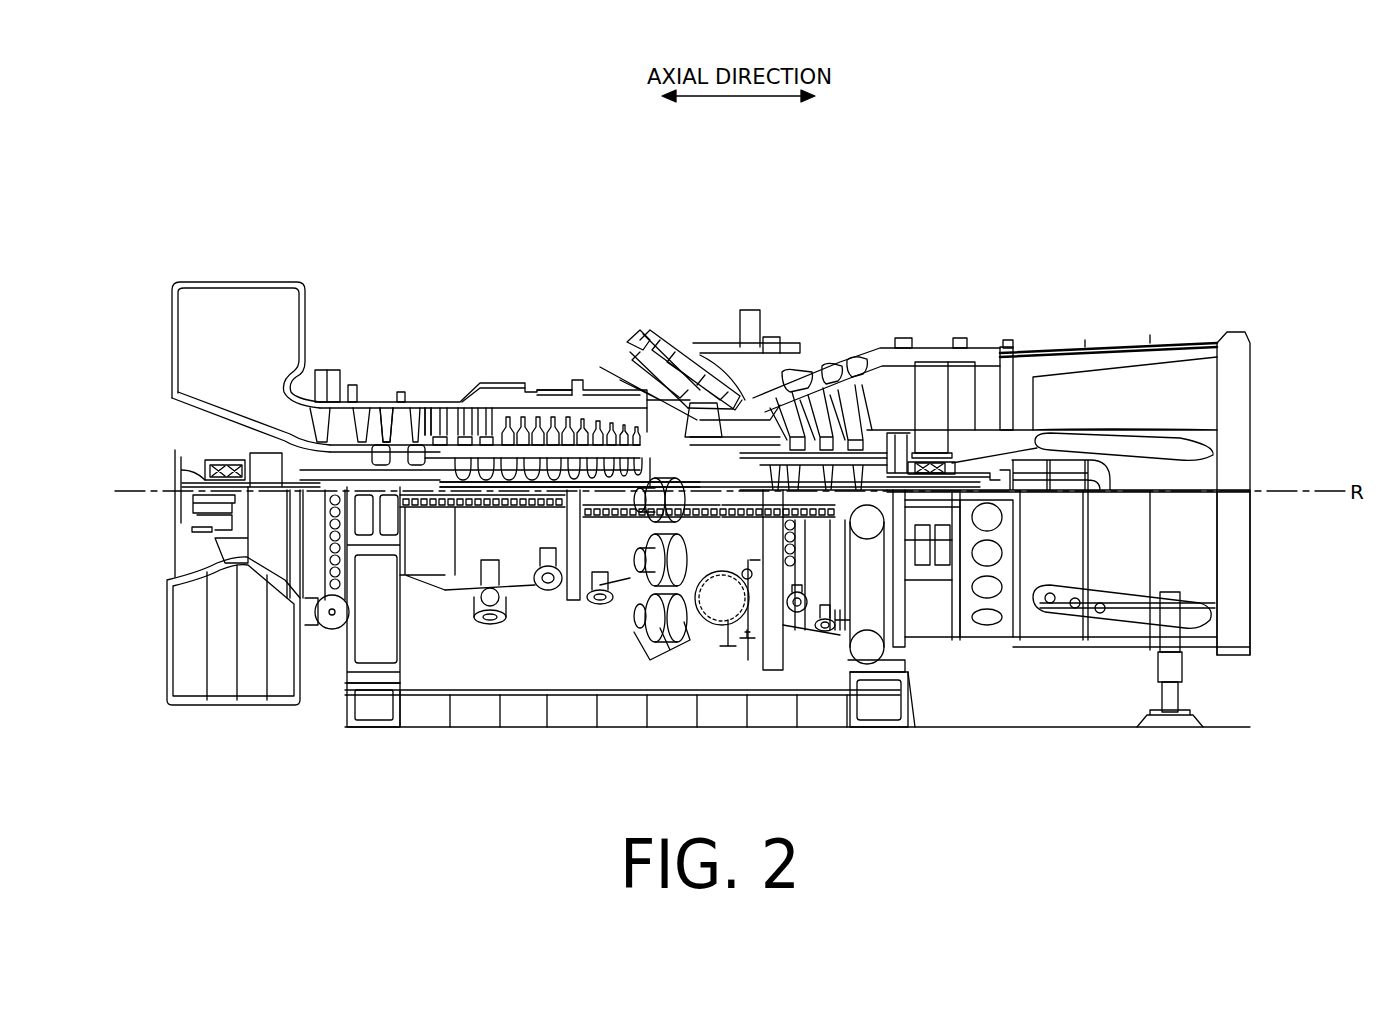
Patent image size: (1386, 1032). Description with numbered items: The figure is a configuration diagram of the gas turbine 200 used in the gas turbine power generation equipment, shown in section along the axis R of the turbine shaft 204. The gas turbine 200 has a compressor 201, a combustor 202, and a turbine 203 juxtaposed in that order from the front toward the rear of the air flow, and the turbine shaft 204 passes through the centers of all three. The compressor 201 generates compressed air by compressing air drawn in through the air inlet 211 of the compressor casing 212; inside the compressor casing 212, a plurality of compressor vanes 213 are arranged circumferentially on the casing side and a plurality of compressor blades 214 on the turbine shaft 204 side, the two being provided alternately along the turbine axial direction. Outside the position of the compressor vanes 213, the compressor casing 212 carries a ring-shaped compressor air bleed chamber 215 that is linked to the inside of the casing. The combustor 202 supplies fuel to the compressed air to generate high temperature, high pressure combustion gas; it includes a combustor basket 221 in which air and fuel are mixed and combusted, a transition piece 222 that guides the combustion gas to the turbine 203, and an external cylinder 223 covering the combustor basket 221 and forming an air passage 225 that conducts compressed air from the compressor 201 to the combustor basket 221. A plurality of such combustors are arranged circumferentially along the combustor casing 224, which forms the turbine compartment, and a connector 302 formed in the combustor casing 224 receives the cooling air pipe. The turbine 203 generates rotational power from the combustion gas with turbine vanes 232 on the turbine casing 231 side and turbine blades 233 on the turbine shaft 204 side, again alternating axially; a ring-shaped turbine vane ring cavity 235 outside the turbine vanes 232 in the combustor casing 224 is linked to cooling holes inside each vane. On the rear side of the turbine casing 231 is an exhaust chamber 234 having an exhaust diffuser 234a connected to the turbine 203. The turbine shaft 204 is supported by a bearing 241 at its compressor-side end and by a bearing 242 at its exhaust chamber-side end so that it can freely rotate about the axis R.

The gas turbine 200 is at (885, 274).
The compressor 201 is at (380, 357).
The combustor 202 is at (642, 328).
The turbine 203 is at (906, 336).
The turbine shaft 204 is at (680, 470).
The air inlet 211 is at (185, 340).
The compressor casing 212 is at (560, 400).
The compressor vanes 213 is at (385, 425).
The compressor blades 214 is at (432, 415).
The compressor air bleed chamber 215 is at (545, 398).
The combustor basket 221 is at (700, 395).
The transition piece 222 is at (712, 400).
The external cylinder 223 is at (650, 360).
The combustor casing 224 is at (725, 398).
The air passage 225 is at (740, 372).
The turbine casing 231 is at (838, 398).
The turbine vanes 232 is at (755, 345).
The turbine blades 233 is at (800, 398).
The exhaust chamber 234 is at (1113, 346).
The exhaust diffuser 234a is at (1010, 365).
The turbine vane ring cavity 235 is at (828, 395).
The bearing 241 is at (200, 468).
The bearing 242 is at (960, 460).
The connector 302 is at (728, 600).